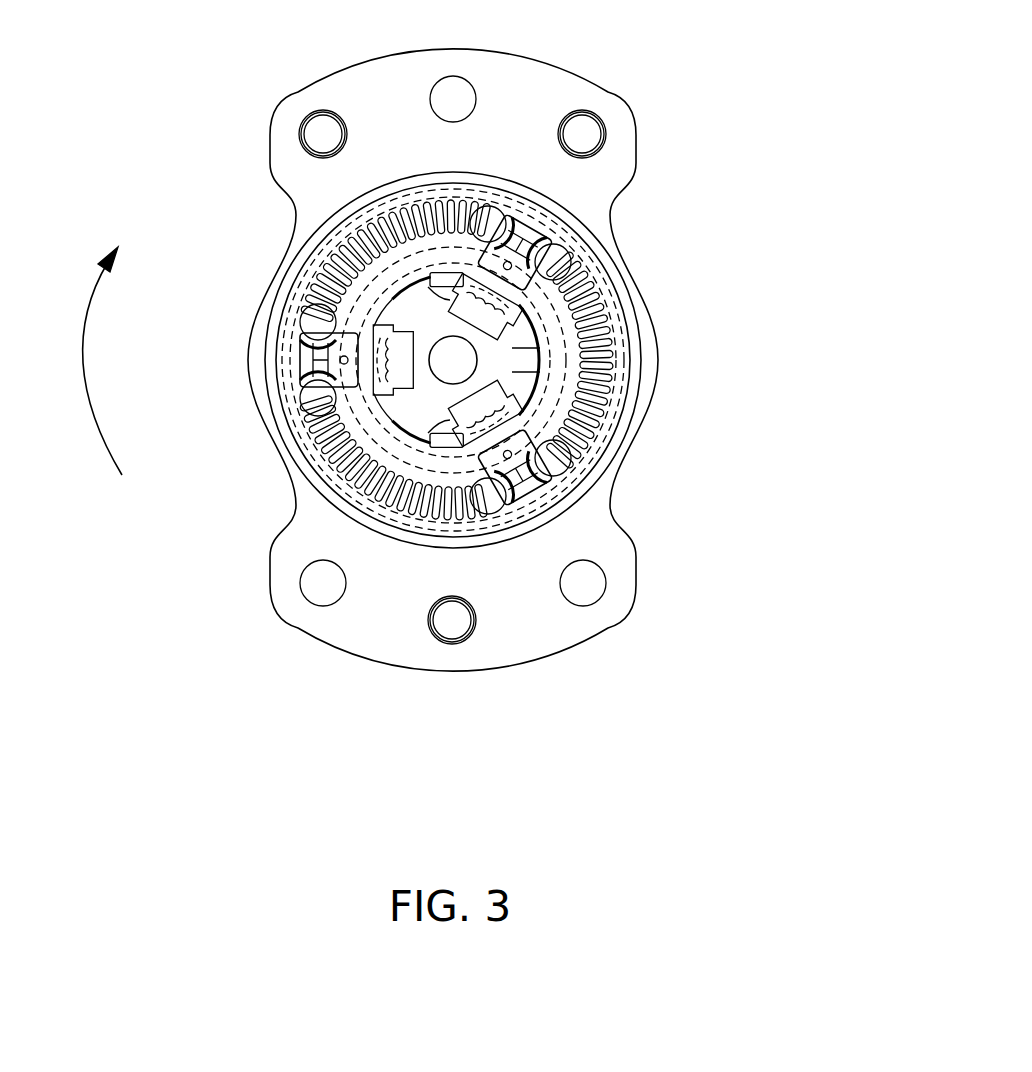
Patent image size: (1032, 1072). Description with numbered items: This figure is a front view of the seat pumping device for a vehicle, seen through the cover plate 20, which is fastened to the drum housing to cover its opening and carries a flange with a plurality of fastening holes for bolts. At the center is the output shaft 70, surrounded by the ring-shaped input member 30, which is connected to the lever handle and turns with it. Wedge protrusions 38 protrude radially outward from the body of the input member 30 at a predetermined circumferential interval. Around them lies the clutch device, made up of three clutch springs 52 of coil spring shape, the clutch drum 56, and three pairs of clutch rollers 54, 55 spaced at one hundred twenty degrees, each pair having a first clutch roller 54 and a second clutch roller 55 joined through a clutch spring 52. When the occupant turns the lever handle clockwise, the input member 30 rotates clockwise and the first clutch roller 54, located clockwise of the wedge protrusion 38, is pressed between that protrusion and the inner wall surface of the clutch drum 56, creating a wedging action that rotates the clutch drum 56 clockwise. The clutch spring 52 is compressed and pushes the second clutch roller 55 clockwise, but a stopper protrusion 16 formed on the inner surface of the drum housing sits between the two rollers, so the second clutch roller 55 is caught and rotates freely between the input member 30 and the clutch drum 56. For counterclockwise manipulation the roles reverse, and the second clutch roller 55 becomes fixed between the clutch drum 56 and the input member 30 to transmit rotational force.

The stopper protrusion 16 is at (436, 320).
The cover plate 20 is at (548, 628).
The input member 30 is at (513, 362).
The wedge protrusion 38 is at (300, 358).
The clutch spring 52 is at (612, 333).
The first clutch roller 54 is at (312, 320).
The second clutch roller 55 is at (312, 397).
The clutch drum 56 is at (612, 390).
The output shaft 70 is at (452, 360).